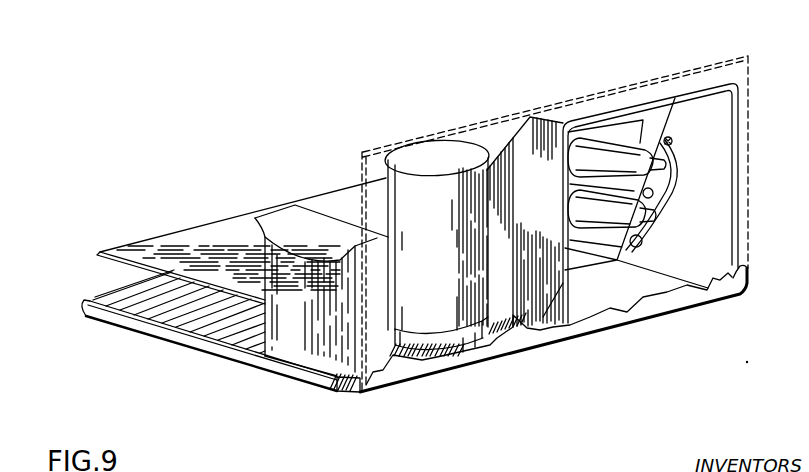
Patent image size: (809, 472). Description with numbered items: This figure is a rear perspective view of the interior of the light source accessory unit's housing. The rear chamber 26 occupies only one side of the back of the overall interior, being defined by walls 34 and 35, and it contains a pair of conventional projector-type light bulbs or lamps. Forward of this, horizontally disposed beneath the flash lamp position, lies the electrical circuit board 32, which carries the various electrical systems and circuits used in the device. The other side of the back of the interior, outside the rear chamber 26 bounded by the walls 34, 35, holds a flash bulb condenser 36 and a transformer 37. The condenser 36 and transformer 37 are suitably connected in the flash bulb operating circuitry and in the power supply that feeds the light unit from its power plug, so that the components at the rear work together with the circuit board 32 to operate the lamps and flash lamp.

The rear chamber 26 is at (646, 291).
The electrical circuit board 32 is at (183, 237).
The wall 34 is at (540, 323).
The wall 35 is at (720, 190).
The flash bulb condenser 36 is at (452, 328).
The transformer 37 is at (285, 343).